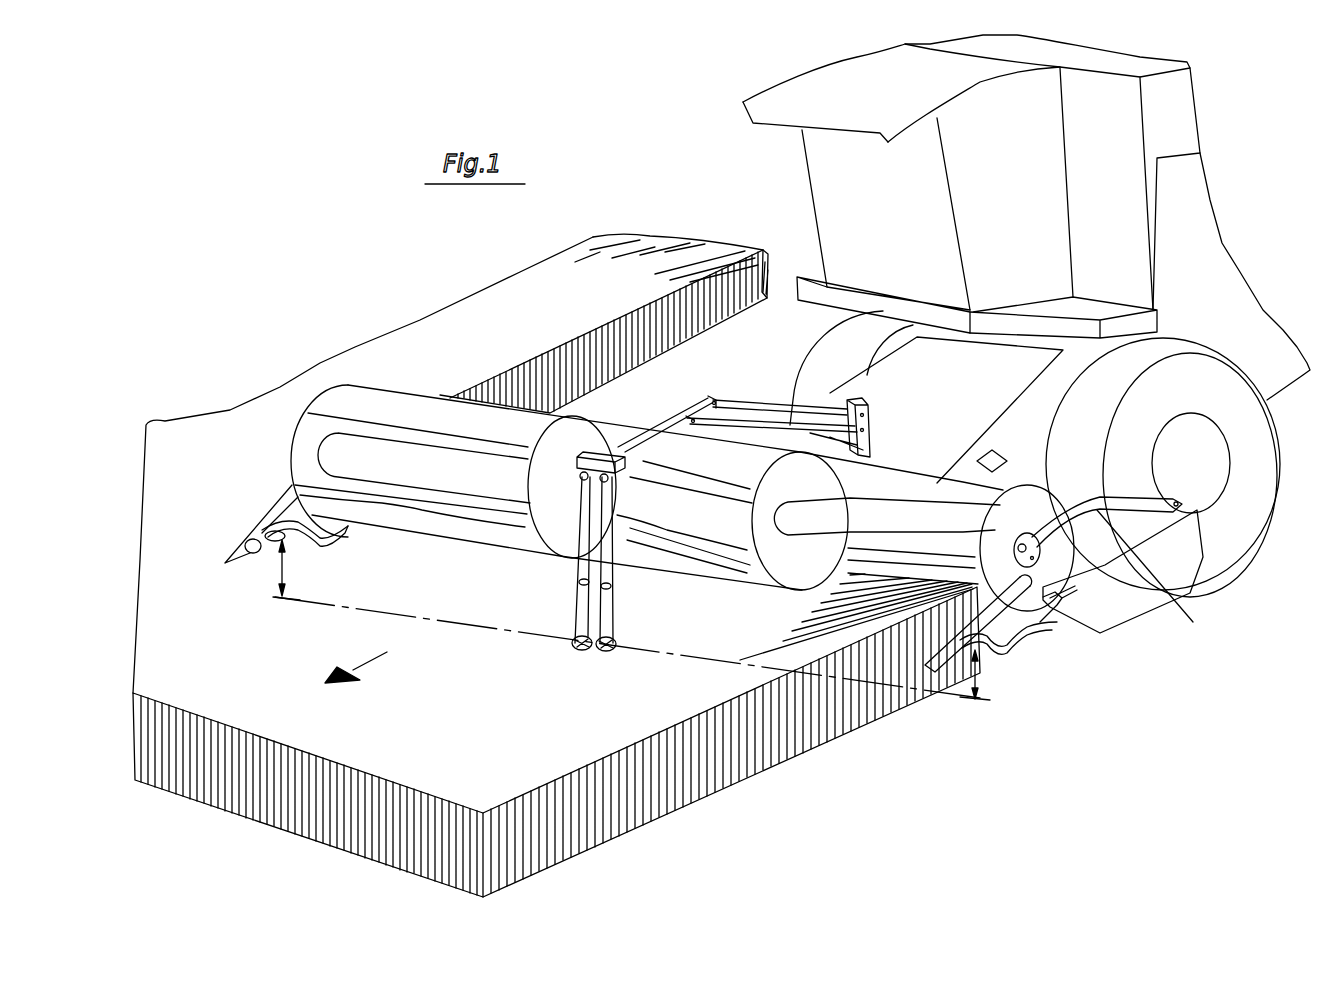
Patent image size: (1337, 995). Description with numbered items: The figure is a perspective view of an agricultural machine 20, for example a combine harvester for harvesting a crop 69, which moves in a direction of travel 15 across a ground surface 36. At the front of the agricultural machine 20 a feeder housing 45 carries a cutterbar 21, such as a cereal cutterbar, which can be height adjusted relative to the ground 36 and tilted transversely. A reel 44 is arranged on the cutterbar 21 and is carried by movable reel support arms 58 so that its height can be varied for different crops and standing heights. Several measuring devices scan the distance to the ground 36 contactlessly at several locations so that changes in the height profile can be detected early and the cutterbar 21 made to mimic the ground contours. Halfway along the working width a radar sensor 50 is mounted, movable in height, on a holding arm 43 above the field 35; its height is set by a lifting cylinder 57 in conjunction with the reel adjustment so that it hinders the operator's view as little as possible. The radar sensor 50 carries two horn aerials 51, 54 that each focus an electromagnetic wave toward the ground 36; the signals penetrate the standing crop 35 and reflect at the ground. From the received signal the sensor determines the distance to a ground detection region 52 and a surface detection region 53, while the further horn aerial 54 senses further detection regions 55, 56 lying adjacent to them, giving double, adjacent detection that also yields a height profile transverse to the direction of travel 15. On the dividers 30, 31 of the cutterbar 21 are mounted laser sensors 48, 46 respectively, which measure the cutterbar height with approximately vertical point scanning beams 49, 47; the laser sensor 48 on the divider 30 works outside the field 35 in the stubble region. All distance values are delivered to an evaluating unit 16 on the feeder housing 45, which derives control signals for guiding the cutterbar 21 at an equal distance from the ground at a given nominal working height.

The direction of travel 15 is at (340, 665).
The evaluating unit 16 is at (1007, 461).
The agricultural machine 20 is at (1211, 152).
The cutterbar 21 is at (1177, 553).
The divider 30 is at (1045, 600).
The divider 31 is at (282, 508).
The field 35 is at (380, 753).
The ground surface 36 is at (822, 828).
The holding arm 43 is at (668, 423).
The reel 44 is at (372, 385).
The feeder housing 45 is at (960, 395).
The laser sensor 46 is at (293, 534).
The scanning beam 47 is at (278, 567).
The laser sensor 48 is at (977, 650).
The scanning beam 49 is at (970, 663).
The radar sensor 50 is at (585, 453).
The horn aerial 51 is at (558, 483).
The ground detection region 52 is at (576, 651).
The surface detection region 53 is at (579, 583).
The horn aerial 54 is at (610, 474).
The detection region 55 is at (613, 650).
The detection region 56 is at (611, 587).
The lifting cylinder 57 is at (870, 438).
The reel support arms 58 is at (1160, 580).
The crop 69 is at (325, 362).